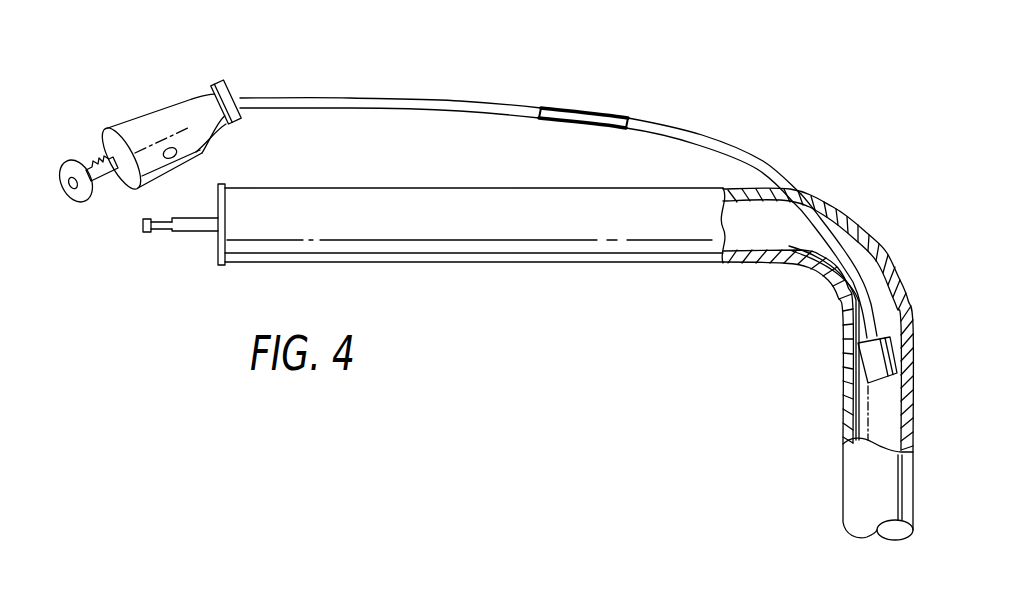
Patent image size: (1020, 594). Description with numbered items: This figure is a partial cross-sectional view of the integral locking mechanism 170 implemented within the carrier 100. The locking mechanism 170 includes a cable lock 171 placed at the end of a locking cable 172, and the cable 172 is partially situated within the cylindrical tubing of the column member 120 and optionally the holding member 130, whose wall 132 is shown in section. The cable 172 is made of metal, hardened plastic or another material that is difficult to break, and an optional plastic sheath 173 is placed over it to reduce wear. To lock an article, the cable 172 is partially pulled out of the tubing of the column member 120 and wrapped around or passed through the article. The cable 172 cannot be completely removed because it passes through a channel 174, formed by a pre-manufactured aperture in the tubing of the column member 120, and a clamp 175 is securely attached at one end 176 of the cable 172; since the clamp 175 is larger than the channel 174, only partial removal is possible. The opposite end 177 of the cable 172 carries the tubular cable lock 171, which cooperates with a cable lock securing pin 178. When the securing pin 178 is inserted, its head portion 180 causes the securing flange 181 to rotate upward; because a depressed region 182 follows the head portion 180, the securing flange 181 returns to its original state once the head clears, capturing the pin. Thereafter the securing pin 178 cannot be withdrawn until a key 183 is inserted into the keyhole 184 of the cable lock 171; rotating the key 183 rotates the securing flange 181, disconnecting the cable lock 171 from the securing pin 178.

The carrier 100 is at (682, 331).
The column member 120 is at (848, 485).
The holding member 130 is at (512, 231).
The housing wall 132 is at (310, 262).
The locking mechanism 170 is at (688, 118).
The cable lock 171 is at (188, 113).
The locking cable 172 is at (580, 108).
The plastic sheath 173 is at (518, 99).
The channel 174 is at (818, 207).
The clamp 175 is at (866, 368).
The end of cable 176 is at (860, 302).
The opposite end of cable 177 is at (223, 72).
The cable lock securing pin 178 is at (194, 231).
The head portion 180 is at (143, 226).
The securing flange 181 is at (170, 146).
The depressed region 182 is at (156, 228).
The key 183 is at (76, 165).
The keyhole 184 is at (116, 168).